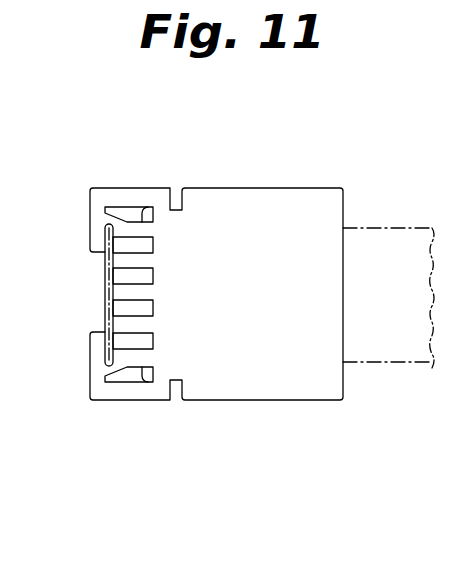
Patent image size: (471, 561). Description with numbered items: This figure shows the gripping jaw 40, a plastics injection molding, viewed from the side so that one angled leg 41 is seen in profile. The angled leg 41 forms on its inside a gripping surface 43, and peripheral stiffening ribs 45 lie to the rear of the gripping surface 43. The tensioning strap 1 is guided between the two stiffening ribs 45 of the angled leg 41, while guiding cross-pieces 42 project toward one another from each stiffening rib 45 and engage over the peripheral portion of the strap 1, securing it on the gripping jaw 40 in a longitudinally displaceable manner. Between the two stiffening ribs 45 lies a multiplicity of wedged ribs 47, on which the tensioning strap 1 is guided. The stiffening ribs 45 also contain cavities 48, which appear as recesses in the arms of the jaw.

The tensioning strap 1 is at (380, 247).
The gripping jaw 40 is at (267, 150).
The angled leg 41 is at (156, 198).
The guiding cross-piece 42 is at (95, 235).
The gripping surface 43 is at (282, 225).
The stiffening rib 45 is at (111, 196).
The wedged rib 47 is at (145, 262).
The cavity 48 is at (125, 208).